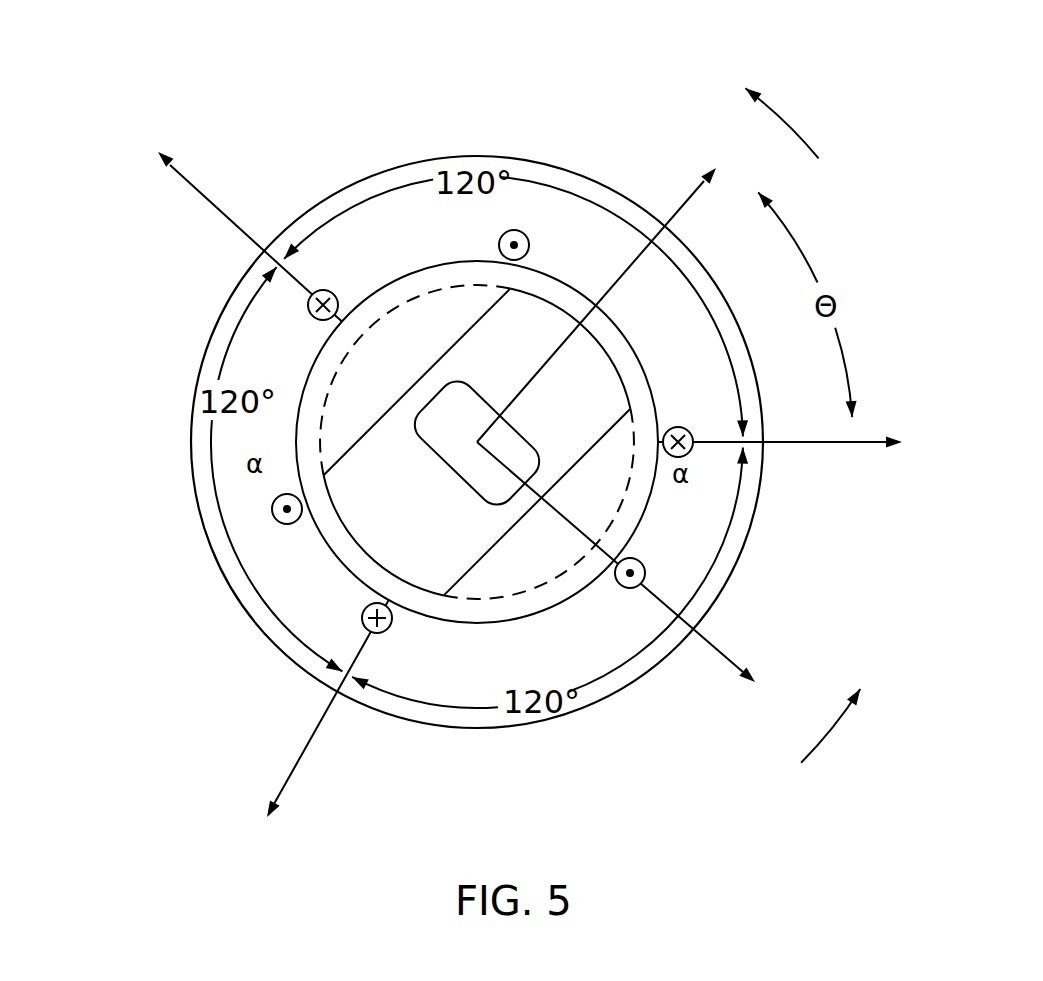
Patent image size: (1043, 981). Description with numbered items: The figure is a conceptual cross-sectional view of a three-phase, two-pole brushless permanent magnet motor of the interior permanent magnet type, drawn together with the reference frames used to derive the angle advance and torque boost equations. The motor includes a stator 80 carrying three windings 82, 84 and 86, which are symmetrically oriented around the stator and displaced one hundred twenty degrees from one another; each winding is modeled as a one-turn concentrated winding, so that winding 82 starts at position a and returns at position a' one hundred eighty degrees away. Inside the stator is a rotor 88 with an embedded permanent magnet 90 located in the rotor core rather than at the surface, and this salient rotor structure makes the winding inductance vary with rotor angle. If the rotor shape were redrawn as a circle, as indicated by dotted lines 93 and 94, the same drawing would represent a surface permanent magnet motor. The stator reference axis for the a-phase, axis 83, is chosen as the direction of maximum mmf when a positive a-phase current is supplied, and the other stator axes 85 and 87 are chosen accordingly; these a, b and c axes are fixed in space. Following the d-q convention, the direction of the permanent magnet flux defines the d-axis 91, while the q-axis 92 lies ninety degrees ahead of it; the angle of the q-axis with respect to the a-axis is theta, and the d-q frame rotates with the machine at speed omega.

The stator 80 is at (560, 167).
The winding 82 is at (686, 455).
The a-phase stator reference axis 83 is at (783, 445).
The winding 84 is at (386, 630).
The stator reference axis 85 is at (310, 740).
The winding 86 is at (333, 294).
The stator reference axis 87 is at (233, 220).
The rotor 88 is at (340, 526).
The permanent magnet 90 is at (466, 492).
The d-axis 91 is at (715, 650).
The q-axis 92 is at (691, 186).
The dotted line 93 is at (430, 298).
The dotted line 94 is at (612, 530).